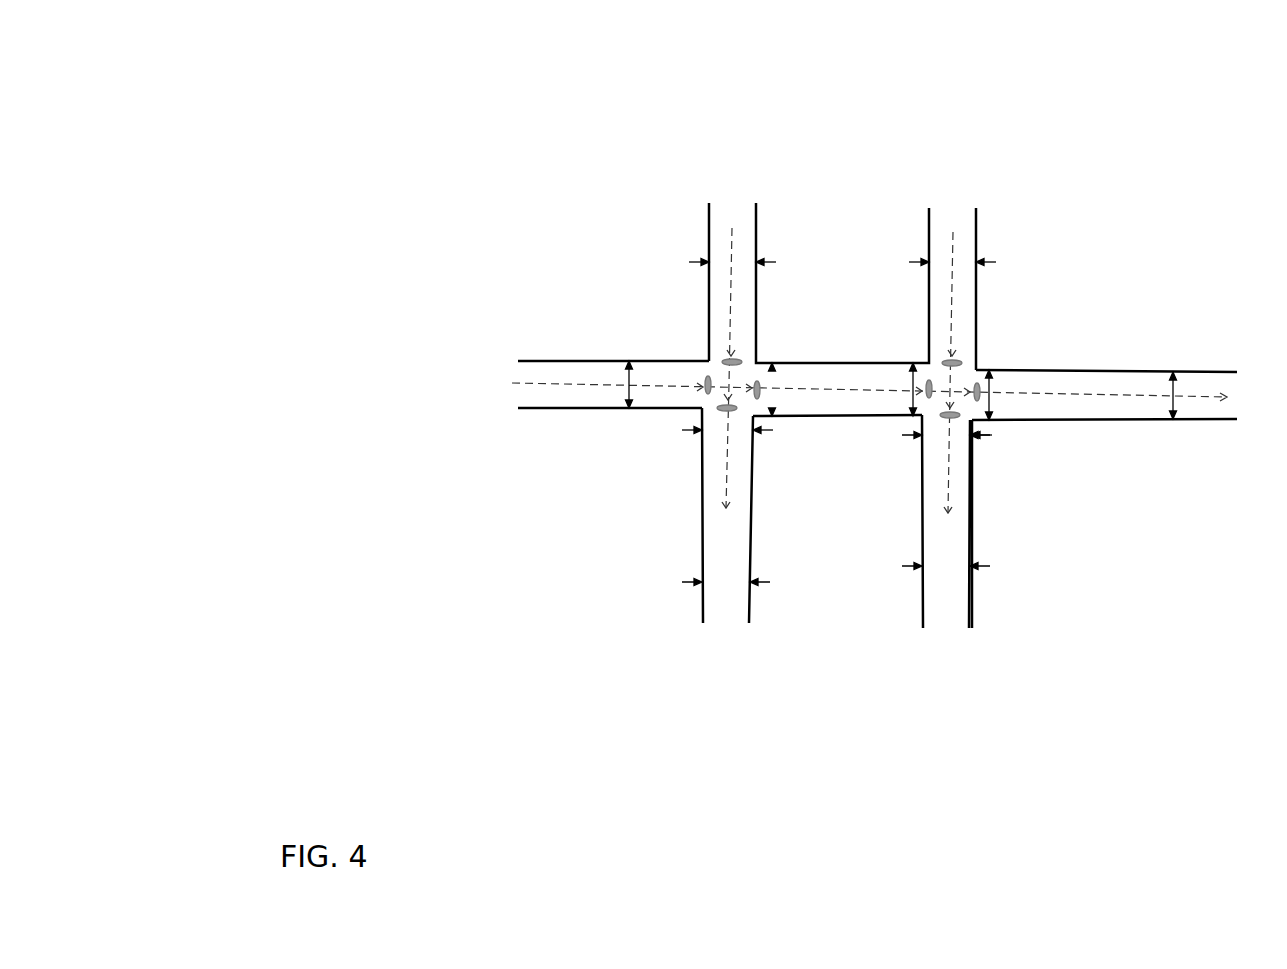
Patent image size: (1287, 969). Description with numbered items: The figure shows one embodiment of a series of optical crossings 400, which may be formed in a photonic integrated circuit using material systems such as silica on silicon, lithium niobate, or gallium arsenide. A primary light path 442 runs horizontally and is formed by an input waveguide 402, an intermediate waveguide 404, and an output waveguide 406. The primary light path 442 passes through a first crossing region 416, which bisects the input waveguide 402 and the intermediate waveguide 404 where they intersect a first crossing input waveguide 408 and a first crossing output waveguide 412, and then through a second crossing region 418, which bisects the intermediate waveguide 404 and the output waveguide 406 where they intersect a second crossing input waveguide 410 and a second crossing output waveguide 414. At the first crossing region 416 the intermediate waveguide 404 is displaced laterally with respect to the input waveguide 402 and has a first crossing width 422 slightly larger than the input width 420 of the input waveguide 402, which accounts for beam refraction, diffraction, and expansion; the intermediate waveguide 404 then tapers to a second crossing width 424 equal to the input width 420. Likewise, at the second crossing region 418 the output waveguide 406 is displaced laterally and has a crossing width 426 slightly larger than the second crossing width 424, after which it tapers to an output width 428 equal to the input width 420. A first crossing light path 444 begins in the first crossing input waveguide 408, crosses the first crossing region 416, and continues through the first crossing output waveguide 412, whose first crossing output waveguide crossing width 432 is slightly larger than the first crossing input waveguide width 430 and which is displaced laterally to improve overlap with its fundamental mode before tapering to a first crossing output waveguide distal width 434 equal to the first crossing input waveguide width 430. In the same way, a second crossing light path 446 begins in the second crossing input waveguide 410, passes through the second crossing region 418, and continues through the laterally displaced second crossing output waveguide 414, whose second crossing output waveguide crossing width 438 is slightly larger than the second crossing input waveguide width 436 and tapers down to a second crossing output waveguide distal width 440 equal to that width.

The series of optical crossings 400 is at (518, 138).
The input waveguide 402 is at (517, 377).
The intermediate waveguide 404 is at (827, 378).
The output waveguide 406 is at (1205, 385).
The first crossing input waveguide 408 is at (716, 210).
The second crossing input waveguide 410 is at (945, 218).
The first crossing output waveguide 412 is at (717, 565).
The second crossing output waveguide 414 is at (937, 565).
The first crossing region 416 is at (704, 360).
The second crossing region 418 is at (977, 370).
The input width 420 is at (617, 398).
The first crossing width 422 is at (773, 398).
The second crossing width 424 is at (913, 369).
The crossing width 426 is at (993, 402).
The output width 428 is at (1177, 400).
The first crossing input waveguide width 430 is at (768, 262).
The first crossing output waveguide crossing width 432 is at (688, 432).
The first crossing output waveguide distal width 434 is at (687, 582).
The second crossing input waveguide width 436 is at (920, 257).
The second crossing output waveguide crossing width 438 is at (908, 435).
The second crossing output waveguide distal width 440 is at (908, 567).
The primary light path 442 is at (568, 385).
The first crossing light path 444 is at (730, 242).
The second crossing light path 446 is at (983, 250).